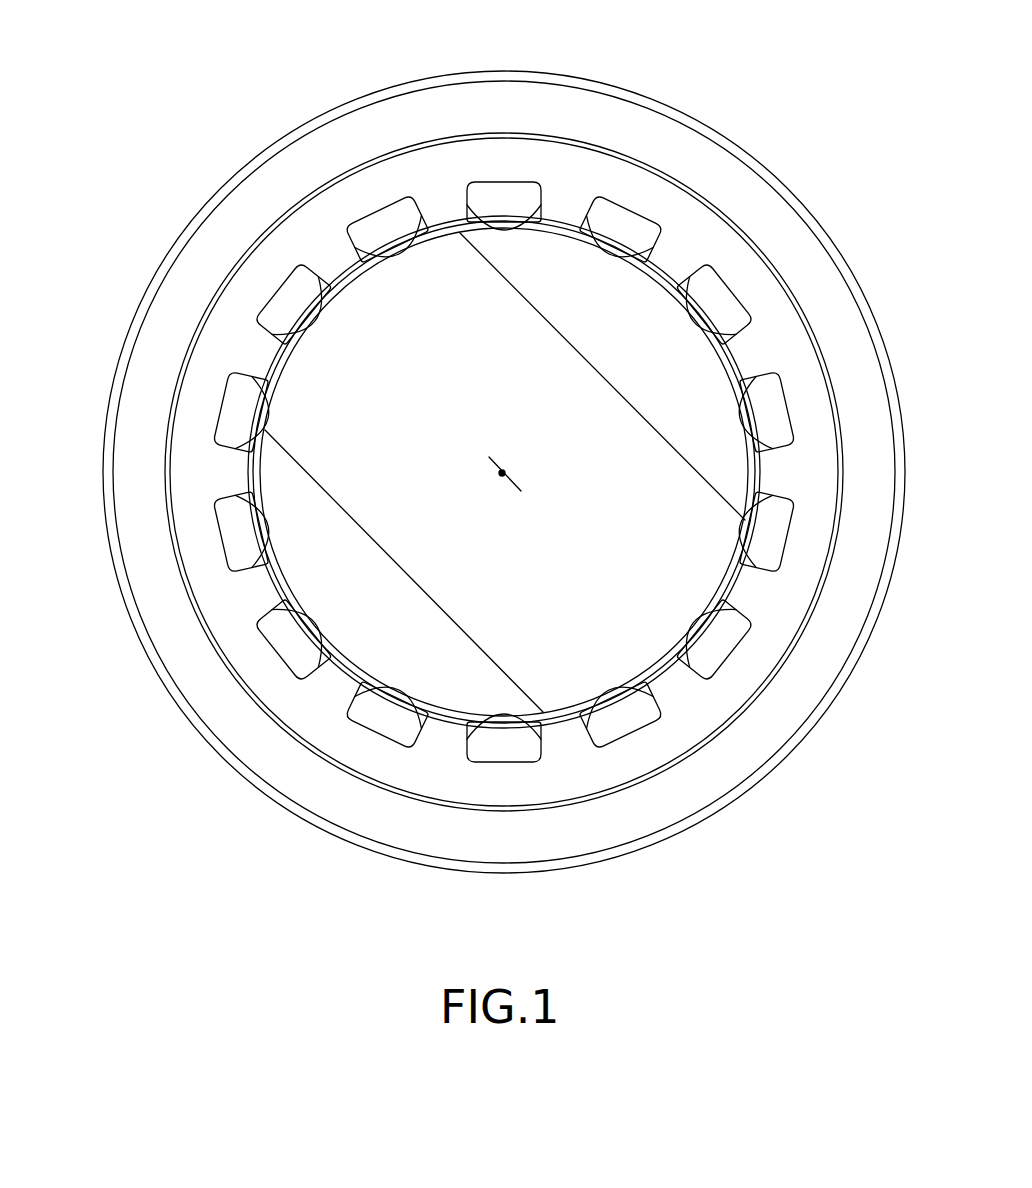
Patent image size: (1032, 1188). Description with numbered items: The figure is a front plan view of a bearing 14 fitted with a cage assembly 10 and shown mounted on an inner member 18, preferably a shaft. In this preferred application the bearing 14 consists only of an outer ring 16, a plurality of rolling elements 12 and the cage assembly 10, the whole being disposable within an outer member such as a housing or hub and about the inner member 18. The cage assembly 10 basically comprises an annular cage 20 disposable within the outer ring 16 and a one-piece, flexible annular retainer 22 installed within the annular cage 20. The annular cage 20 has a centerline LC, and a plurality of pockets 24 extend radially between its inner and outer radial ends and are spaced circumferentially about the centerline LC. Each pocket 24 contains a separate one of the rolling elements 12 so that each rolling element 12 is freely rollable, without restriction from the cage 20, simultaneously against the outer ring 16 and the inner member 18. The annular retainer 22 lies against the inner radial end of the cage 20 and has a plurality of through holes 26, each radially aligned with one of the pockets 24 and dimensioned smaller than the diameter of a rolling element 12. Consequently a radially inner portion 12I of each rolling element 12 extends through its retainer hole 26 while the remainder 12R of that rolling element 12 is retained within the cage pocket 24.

The cage assembly 10 is at (745, 200).
The rolling elements 12 is at (400, 243).
The remainder of the rolling element 12R is at (521, 367).
The radially inner portion of the rolling element 12I is at (238, 614).
The bearing 14 is at (143, 188).
The outer ring 16 is at (133, 325).
The inner member 18 is at (558, 710).
The annular cage 20 is at (165, 487).
The annular retainer 22 is at (268, 480).
The pockets 24 is at (503, 205).
The through holes 26 is at (693, 317).
The centerline LC is at (502, 473).